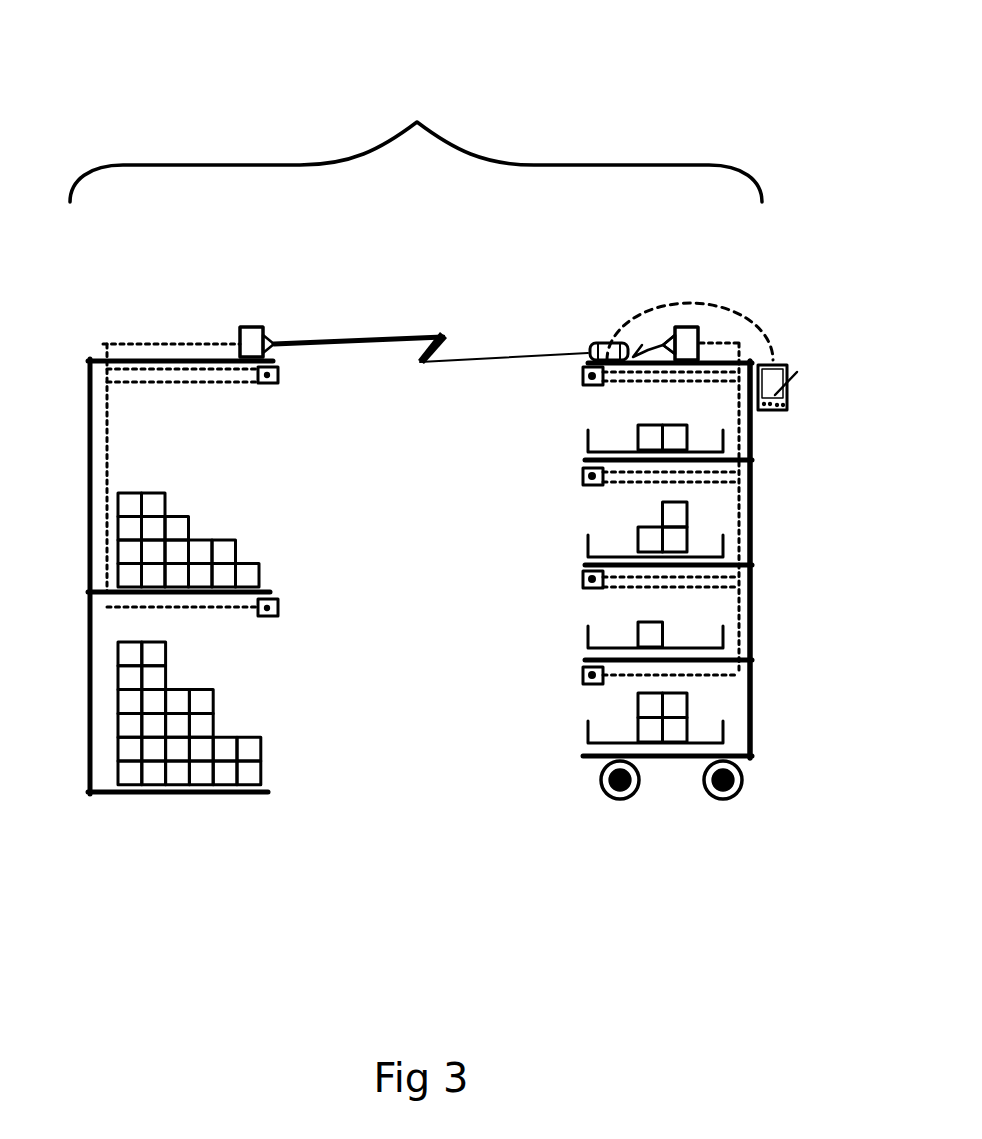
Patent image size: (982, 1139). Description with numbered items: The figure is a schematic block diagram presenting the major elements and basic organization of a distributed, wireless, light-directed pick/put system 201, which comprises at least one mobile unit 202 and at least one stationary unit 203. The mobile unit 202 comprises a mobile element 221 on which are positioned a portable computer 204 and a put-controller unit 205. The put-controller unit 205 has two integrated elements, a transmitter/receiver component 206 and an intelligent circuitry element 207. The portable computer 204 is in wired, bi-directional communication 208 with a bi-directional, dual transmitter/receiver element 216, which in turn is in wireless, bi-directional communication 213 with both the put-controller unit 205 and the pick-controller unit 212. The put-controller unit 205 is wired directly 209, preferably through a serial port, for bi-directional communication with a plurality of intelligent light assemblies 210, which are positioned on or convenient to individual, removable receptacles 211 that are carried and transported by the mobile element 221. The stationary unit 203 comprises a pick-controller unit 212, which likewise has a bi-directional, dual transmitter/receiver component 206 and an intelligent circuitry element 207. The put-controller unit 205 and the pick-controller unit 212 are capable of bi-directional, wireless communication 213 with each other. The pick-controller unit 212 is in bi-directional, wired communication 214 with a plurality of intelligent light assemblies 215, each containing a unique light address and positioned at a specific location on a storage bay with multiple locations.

The pick/put system 201 is at (417, 105).
The mobile unit 202 is at (805, 836).
The stationary unit 203 is at (45, 836).
The portable computer 204 is at (787, 392).
The put-controller unit 205 is at (657, 246).
The transmitter/receiver component 206 is at (278, 338).
The intelligent circuitry element 207 is at (252, 327).
The wired bi-directional communication 208 is at (748, 332).
The wired connection 209 is at (723, 343).
The intelligent light assemblies 210 is at (583, 377).
The removable receptacles 211 is at (588, 438).
The pick-controller unit 212 is at (285, 250).
The wireless bi-directional communication 213 is at (416, 337).
The wired communication 214 is at (142, 344).
The intelligent light assemblies 215 is at (278, 376).
The dual transmitter/receiver element 216 is at (590, 345).
The mobile element 221 is at (753, 513).